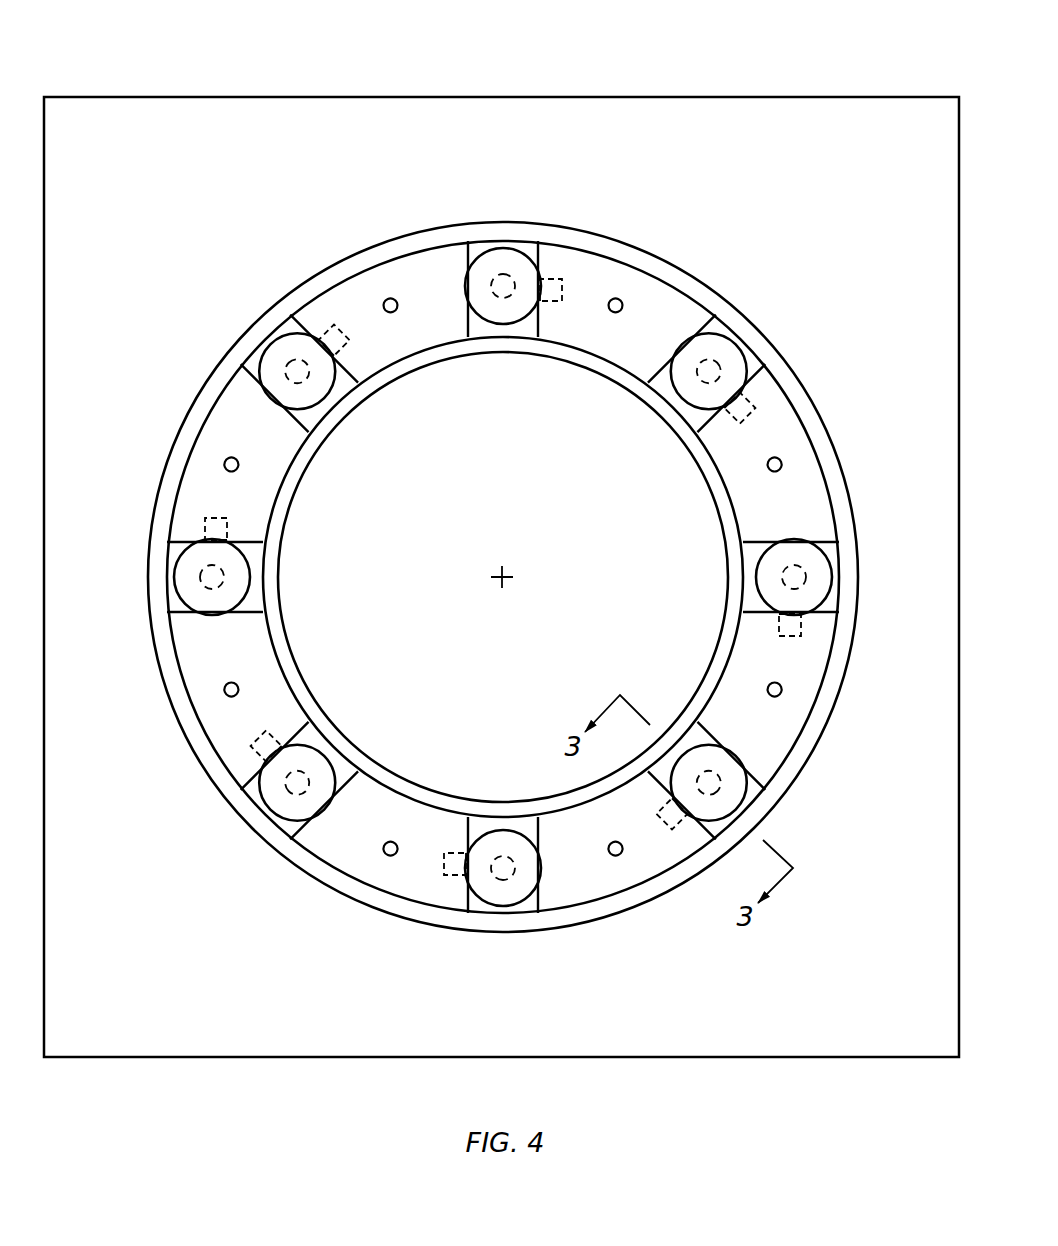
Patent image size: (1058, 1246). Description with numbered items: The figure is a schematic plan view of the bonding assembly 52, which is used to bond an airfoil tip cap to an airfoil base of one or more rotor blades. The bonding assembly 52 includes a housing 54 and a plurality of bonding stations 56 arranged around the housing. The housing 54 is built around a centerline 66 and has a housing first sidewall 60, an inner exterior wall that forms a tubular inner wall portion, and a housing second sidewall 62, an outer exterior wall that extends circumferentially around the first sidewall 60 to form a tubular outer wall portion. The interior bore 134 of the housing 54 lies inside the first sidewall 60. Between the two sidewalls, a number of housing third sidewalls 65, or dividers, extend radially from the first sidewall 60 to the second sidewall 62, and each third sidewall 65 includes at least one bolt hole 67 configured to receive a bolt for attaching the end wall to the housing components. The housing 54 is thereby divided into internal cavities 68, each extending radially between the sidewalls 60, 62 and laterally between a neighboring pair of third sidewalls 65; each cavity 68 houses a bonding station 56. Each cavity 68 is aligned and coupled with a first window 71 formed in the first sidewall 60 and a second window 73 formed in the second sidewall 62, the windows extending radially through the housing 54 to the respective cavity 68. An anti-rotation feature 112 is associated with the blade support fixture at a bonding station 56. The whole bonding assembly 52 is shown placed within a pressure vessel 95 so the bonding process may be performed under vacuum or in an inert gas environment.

The bonding assembly 52 is at (838, 79).
The housing 54 is at (806, 383).
The bonding station 56 is at (510, 243).
The housing first sidewall 60 is at (295, 653).
The housing second sidewall 62 is at (204, 752).
The housing third sidewall 65 is at (426, 263).
The centerline 66 is at (510, 577).
The bolt hole 67 is at (387, 299).
The internal cavity 68 is at (683, 383).
The first window 71 is at (313, 413).
The second window 73 is at (246, 355).
The pressure vessel 95 is at (686, 97).
The anti-rotation feature 112 is at (670, 840).
The interior bore 134 is at (547, 519).